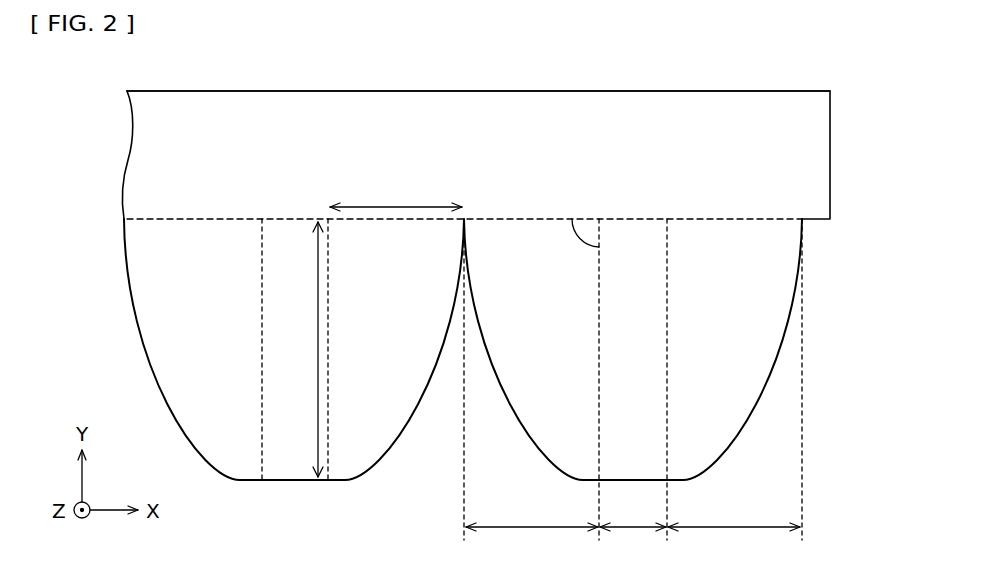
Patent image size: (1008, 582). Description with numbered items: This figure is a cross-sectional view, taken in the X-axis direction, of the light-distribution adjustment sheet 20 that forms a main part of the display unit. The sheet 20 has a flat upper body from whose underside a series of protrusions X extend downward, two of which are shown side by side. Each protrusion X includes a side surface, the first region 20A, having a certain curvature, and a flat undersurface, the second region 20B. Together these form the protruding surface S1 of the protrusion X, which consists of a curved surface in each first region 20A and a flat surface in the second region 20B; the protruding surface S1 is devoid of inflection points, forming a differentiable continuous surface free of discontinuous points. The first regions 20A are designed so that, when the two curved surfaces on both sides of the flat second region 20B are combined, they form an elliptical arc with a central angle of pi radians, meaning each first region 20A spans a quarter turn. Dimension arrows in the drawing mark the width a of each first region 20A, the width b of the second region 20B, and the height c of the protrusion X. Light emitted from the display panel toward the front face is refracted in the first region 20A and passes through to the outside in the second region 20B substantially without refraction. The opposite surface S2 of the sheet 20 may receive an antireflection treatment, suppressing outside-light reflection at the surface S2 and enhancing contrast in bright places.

The light-distribution adjustment sheet 20 is at (505, 304).
The first region 20A is at (633, 529).
The second region 20B is at (633, 529).
The protruding surface S1 is at (233, 478).
The surface S2 is at (481, 91).
The protrusion X is at (770, 394).
The width dimension a is at (396, 193).
The width dimension b is at (631, 510).
The height dimension c is at (310, 349).